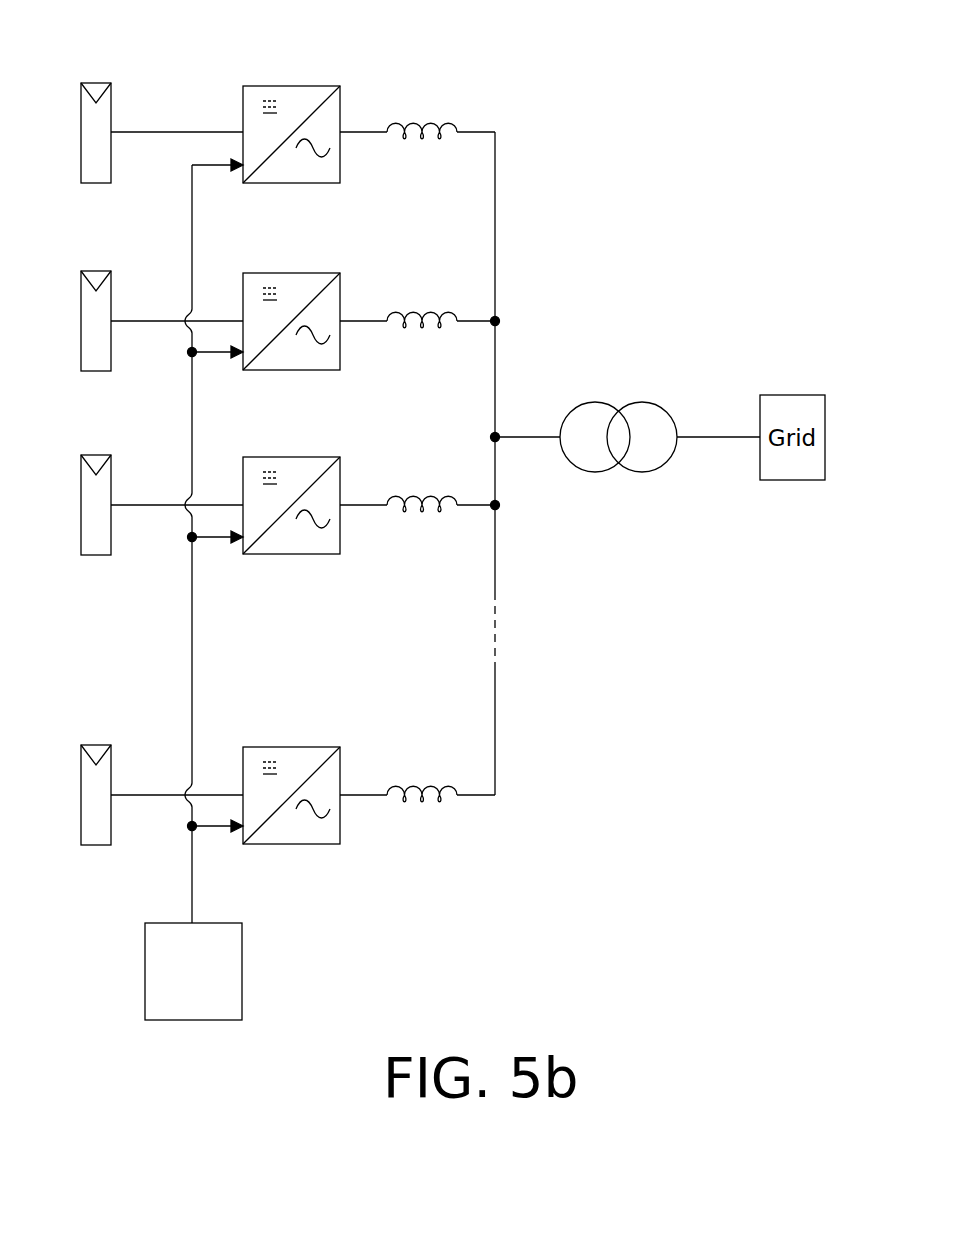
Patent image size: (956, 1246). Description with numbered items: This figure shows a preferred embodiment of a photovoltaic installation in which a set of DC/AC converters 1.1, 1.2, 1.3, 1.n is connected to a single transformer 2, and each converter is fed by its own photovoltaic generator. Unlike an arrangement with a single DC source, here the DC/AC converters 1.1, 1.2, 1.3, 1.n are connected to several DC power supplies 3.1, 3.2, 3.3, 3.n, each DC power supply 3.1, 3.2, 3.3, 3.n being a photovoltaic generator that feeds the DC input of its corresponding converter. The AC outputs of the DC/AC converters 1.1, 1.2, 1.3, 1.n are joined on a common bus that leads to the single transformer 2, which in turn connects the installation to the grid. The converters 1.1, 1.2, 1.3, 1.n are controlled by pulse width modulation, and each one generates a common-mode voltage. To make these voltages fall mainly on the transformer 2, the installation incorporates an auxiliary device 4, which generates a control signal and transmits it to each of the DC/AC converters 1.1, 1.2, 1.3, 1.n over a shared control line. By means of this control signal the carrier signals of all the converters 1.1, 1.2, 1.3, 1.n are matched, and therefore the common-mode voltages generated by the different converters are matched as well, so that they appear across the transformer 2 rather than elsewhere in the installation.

The DC/AC converter 1.1 is at (265, 85).
The DC/AC converter 1.2 is at (265, 272).
The DC/AC converter 1.3 is at (265, 473).
The DC/AC converter 1.n is at (265, 745).
The transformer 2 is at (618, 410).
The DC power supply 3.1 is at (93, 158).
The DC power supply 3.2 is at (93, 347).
The DC power supply 3.3 is at (93, 545).
The DC power supply 3.n is at (100, 826).
The auxiliary device 4 is at (220, 976).